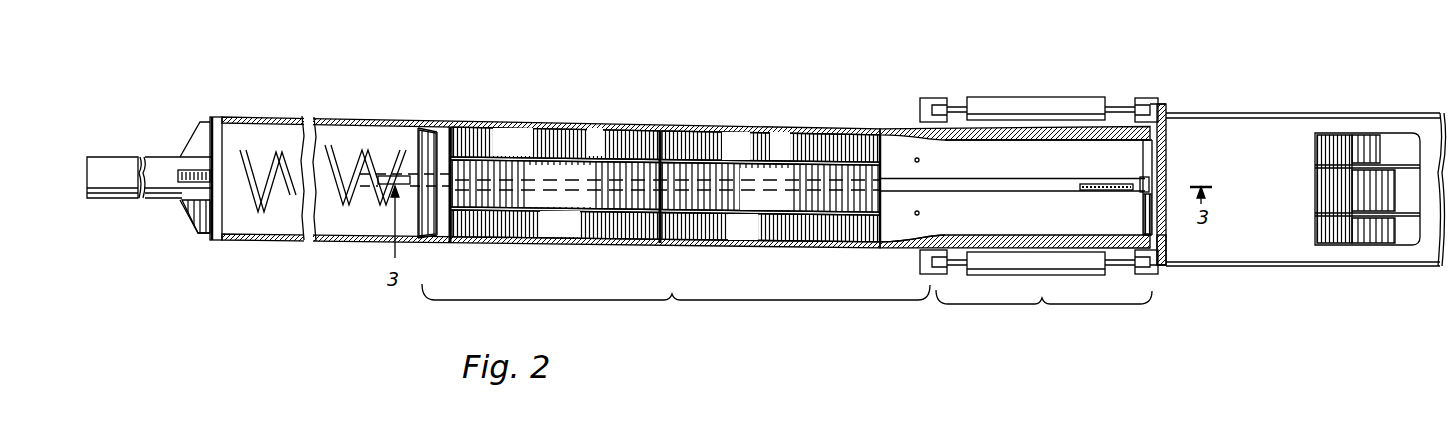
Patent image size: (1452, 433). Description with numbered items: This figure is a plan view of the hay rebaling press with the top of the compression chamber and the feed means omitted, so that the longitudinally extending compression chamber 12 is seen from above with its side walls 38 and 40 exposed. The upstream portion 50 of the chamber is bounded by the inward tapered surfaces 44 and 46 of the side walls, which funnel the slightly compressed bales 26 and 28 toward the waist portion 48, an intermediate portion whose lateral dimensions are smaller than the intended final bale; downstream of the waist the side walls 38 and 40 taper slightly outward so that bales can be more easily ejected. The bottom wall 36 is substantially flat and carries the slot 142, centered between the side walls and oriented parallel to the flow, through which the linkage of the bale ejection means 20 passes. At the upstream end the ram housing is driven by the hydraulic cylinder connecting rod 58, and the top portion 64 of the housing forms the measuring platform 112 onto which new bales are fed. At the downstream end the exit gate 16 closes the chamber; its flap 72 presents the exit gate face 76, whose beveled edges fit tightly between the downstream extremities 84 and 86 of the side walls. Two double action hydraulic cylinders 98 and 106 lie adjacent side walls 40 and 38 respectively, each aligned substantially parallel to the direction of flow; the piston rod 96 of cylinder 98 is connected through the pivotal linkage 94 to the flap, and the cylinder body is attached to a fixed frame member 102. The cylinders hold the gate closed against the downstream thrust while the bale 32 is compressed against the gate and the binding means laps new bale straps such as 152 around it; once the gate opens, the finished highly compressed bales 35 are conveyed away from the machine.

The hydraulic cylinder connecting rod 58 is at (128, 161).
The top portion of ram housing 64 is at (278, 140).
The measuring platform 112 is at (348, 150).
The bale 26 is at (549, 140).
The bale 28 is at (754, 132).
The compression chamber 12 is at (892, 152).
The side wall 38 is at (900, 128).
The waist portion 48 is at (947, 125).
The hydraulic cylinder 106 is at (1012, 104).
The downstream extremity of side wall 84 is at (1162, 116).
The bale strap 152 is at (1340, 140).
The highly compressed bale 35 is at (1390, 135).
The exit gate 16 is at (1168, 134).
The inward tapered surface 44 is at (921, 141).
The slot 142 is at (1027, 186).
The bale ejection means 20 is at (1105, 183).
The bottom wall 36 is at (1123, 148).
The flap 72 is at (1166, 184).
The exit gate face 76 is at (1140, 204).
The inward tapered surface 46 is at (927, 235).
The fixed frame member 102 is at (937, 242).
The side wall 40 is at (920, 248).
The downstream extremity of side wall 86 is at (1166, 254).
The pivotal linkage 94 is at (1153, 270).
The hydraulic cylinder 98 is at (1000, 264).
The bale 32 is at (1036, 292).
The piston rod 96 is at (1143, 264).
The upstream portion 50 is at (676, 309).